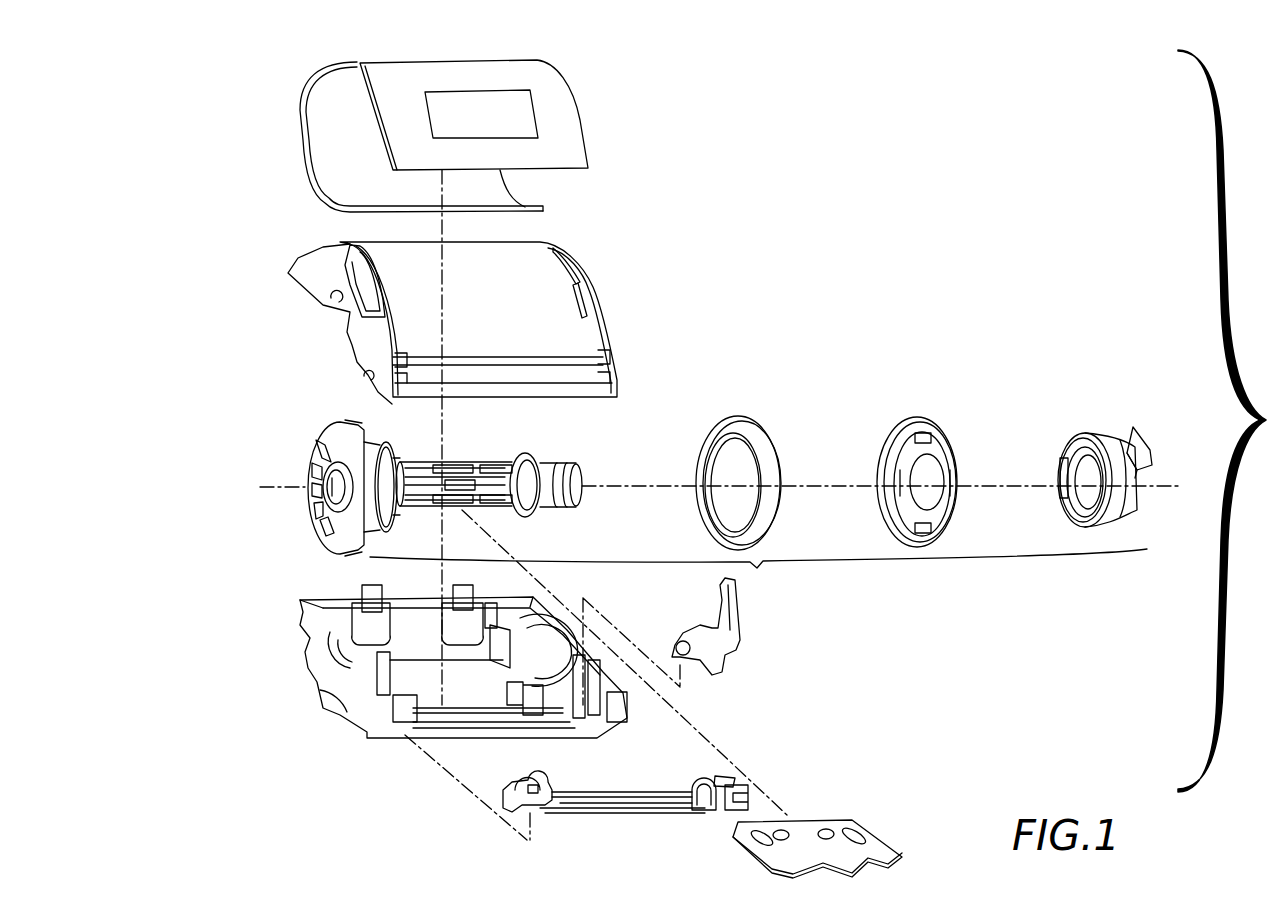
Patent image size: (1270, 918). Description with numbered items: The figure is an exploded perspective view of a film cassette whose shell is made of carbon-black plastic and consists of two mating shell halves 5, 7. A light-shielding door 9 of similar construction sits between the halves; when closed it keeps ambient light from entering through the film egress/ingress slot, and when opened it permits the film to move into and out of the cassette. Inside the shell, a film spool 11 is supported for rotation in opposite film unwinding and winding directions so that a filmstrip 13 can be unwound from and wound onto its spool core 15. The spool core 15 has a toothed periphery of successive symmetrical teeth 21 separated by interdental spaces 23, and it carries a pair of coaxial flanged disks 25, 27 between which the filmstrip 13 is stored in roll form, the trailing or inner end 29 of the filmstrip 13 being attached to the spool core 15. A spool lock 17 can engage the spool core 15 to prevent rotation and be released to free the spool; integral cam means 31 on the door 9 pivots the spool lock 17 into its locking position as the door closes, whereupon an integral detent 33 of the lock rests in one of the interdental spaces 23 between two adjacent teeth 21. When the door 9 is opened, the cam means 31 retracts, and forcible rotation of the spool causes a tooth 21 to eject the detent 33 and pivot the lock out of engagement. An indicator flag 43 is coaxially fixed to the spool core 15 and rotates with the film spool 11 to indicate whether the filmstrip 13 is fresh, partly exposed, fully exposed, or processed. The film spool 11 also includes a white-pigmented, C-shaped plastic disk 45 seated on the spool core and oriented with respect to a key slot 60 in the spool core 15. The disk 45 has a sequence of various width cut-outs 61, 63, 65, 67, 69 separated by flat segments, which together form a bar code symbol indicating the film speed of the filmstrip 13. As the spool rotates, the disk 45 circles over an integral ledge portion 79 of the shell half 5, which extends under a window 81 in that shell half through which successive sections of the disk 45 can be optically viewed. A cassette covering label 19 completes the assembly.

The shell half 5 is at (464, 323).
The shell half 7 is at (333, 707).
The light-shielding door 9 is at (625, 801).
The film spool 11 is at (758, 572).
The filmstrip 13 is at (839, 826).
The spool core 15 is at (518, 452).
The spool lock 17 is at (726, 626).
The cassette covering label 19 is at (570, 90).
The teeth 21 is at (1120, 440).
The interdental spaces 23 is at (1140, 432).
The flanged disk 25 is at (907, 417).
The flanged disk 27 is at (738, 417).
The trailing or inner end 29 is at (803, 820).
The cam means 31 is at (720, 777).
The detent 33 is at (705, 627).
The indicator flag 43 is at (1153, 462).
The white-pigmented plastic disk 45 is at (301, 467).
The key slot 60 is at (313, 500).
The cut-out 61 is at (327, 533).
The cut-out 63 is at (318, 512).
The cut-out 65 is at (310, 495).
The cut-out 67 is at (314, 468).
The cut-out 69 is at (317, 443).
The integral ledge portion 79 is at (370, 297).
The window 81 is at (347, 275).